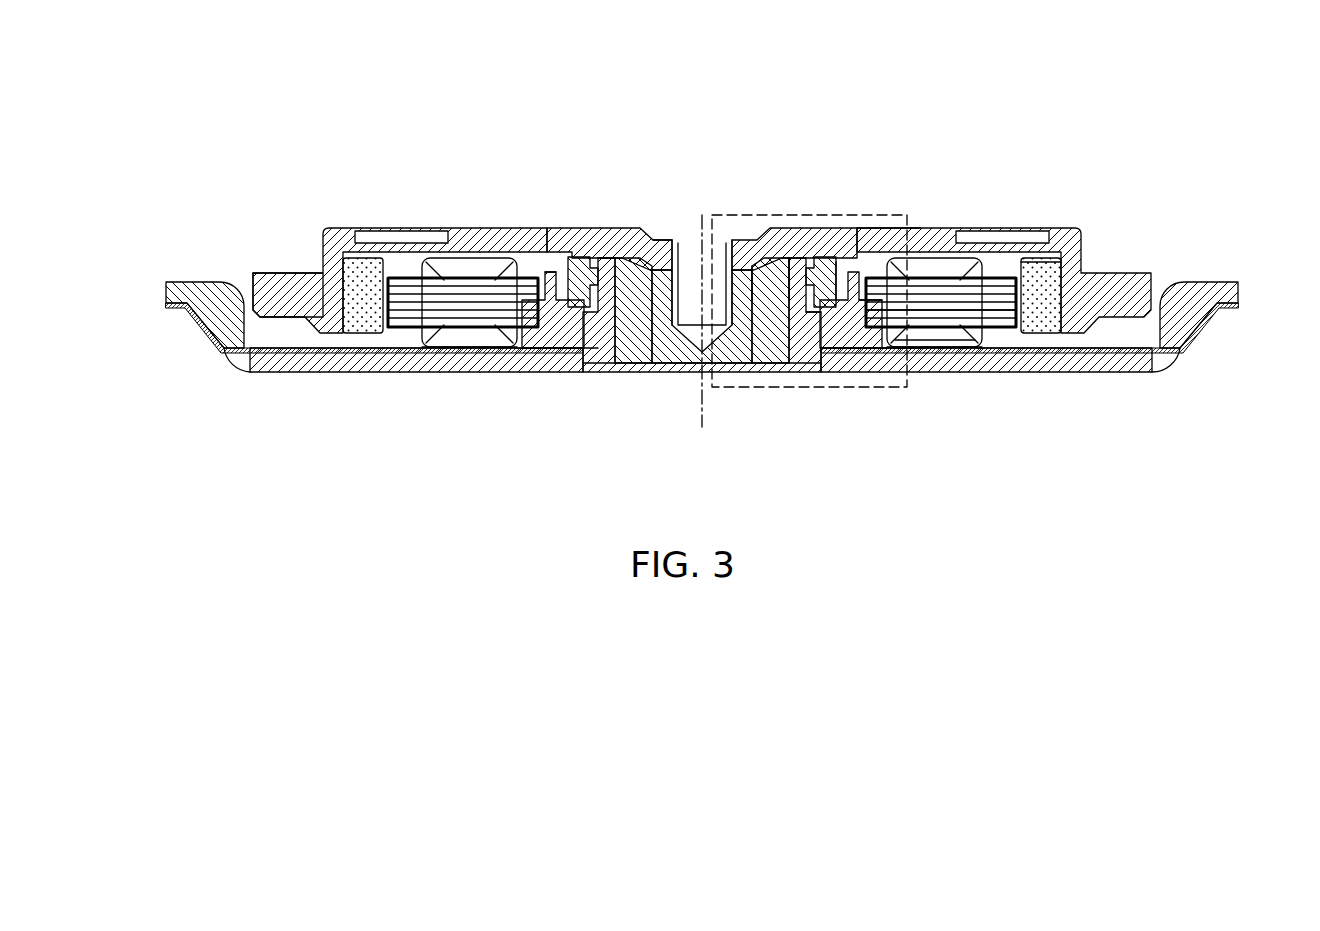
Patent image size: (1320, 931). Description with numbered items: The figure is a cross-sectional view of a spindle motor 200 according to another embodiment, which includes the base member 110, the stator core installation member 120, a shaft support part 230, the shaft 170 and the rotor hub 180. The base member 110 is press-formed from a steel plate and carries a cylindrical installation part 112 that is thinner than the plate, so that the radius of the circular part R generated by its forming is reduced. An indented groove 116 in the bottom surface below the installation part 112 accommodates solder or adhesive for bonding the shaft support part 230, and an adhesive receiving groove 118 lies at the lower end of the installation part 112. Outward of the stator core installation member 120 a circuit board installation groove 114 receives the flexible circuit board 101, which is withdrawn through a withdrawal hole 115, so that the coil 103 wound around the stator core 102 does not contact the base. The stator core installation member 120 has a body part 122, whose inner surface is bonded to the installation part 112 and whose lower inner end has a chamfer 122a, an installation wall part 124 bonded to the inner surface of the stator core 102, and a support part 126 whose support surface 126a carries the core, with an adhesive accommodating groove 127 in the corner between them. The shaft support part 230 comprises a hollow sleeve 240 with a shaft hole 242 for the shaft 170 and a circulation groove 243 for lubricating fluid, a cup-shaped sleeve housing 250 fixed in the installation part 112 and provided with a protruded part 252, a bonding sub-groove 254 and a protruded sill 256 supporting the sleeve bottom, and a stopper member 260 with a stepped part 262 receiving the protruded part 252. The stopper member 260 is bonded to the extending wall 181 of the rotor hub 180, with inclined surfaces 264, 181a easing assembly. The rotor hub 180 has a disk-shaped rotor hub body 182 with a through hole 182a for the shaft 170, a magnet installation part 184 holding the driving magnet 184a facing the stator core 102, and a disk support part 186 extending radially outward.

The spindle motor 200 is at (678, 44).
The circuit board 101 is at (1020, 352).
The stator core 102 is at (965, 318).
The coil 103 is at (932, 338).
The base member 110 is at (1085, 372).
The installation part 112 is at (812, 367).
The circuit board installation groove 114 is at (900, 367).
The withdrawal hole 115 is at (1175, 362).
The indented groove 116 is at (589, 368).
The adhesive receiving groove 118 is at (817, 373).
The stator core installation member 120 is at (567, 486).
The body part 122 is at (576, 350).
The chamfer 122a is at (595, 370).
The installation wall part 124 is at (558, 345).
The support part 126 is at (525, 340).
The support surface 126a is at (878, 350).
The adhesive accommodating groove 127 is at (535, 300).
The shaft 170 is at (656, 240).
The rotor hub 180 is at (453, 130).
The extending wall 181 is at (892, 240).
The inclined surface 181a is at (868, 317).
The rotor hub body 182 is at (460, 228).
The through hole 182a is at (688, 240).
The magnet installation part 184 is at (330, 262).
The driving magnet 184a is at (1050, 280).
The disk support part 186 is at (263, 273).
The shaft support part 230 is at (727, 376).
The sleeve 240 is at (625, 258).
The shaft hole 242 is at (762, 262).
The circulation groove 243 is at (790, 262).
The sleeve housing 250 is at (690, 370).
The protruded part 252 is at (583, 257).
The bonding sub-groove 254 is at (805, 368).
The protruded sill 256 is at (620, 368).
The stopper member 260 is at (845, 262).
The stepped part 262 is at (828, 262).
The inclined surface 264 is at (574, 257).
The circular part R is at (822, 390).